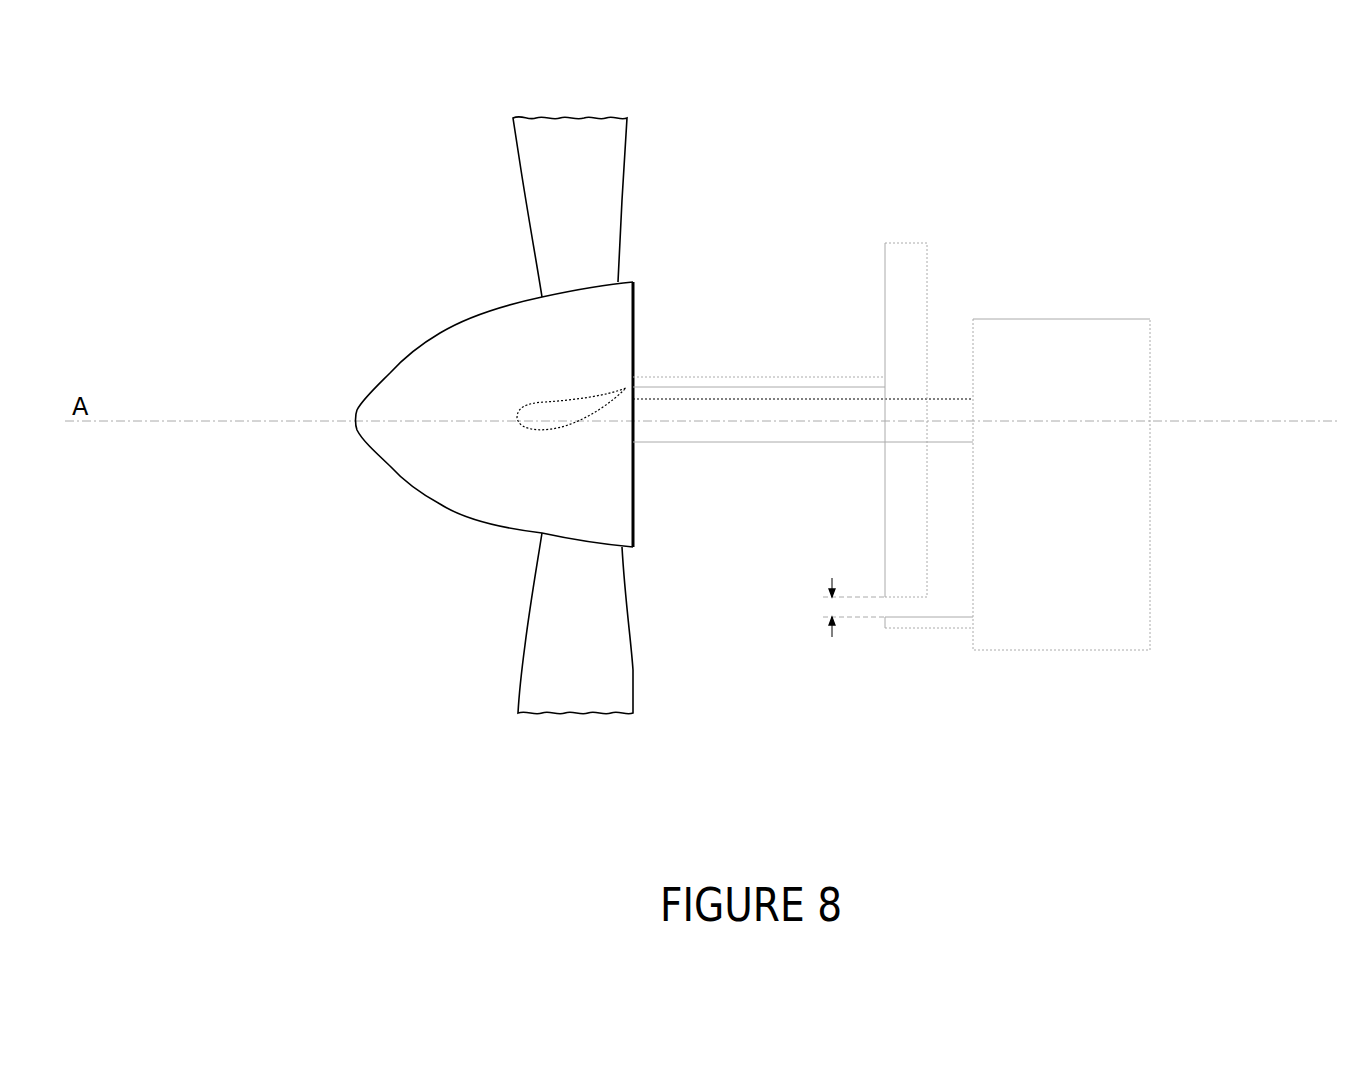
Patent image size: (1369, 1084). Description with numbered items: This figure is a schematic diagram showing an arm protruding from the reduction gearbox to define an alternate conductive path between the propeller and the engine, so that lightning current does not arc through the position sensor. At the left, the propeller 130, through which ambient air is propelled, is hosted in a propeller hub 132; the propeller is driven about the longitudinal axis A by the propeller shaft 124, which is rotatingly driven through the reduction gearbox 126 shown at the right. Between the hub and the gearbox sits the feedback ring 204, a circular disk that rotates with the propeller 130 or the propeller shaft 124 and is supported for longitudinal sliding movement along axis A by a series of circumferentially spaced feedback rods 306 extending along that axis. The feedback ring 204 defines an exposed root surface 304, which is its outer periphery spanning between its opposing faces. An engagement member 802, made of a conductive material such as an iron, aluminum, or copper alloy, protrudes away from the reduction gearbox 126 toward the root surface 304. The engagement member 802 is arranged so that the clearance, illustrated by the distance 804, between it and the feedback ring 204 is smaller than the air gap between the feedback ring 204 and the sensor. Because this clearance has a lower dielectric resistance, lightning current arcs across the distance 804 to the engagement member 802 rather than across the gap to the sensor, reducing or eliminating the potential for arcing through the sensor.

The propeller 130 is at (537, 157).
The propeller hub 132 is at (452, 377).
The feedback rods 306 is at (688, 388).
The propeller shaft 124 is at (813, 437).
The feedback ring 204 is at (885, 289).
The root surface 304 is at (889, 389).
The engagement member 802 is at (912, 623).
The distance 804 is at (829, 607).
The reduction gearbox 126 is at (1050, 632).